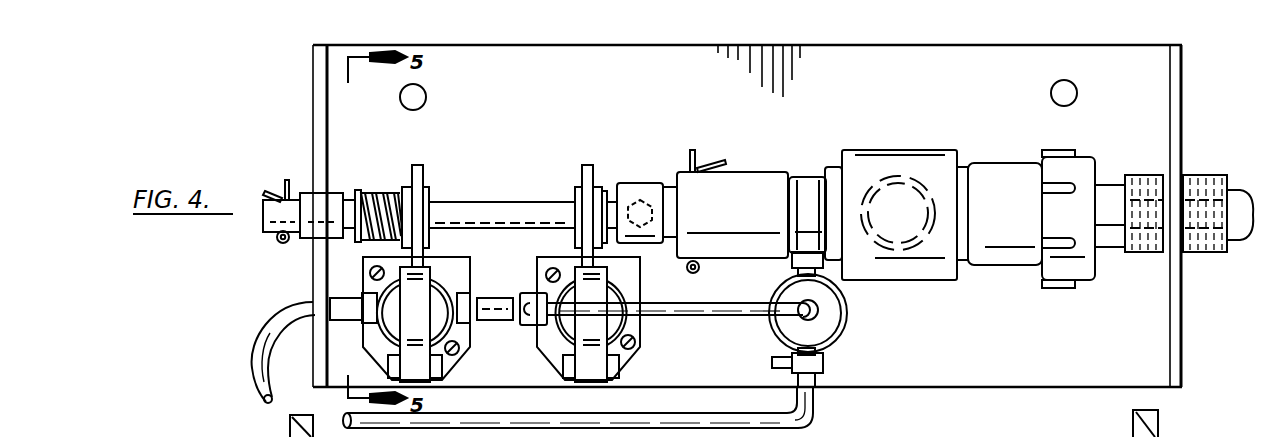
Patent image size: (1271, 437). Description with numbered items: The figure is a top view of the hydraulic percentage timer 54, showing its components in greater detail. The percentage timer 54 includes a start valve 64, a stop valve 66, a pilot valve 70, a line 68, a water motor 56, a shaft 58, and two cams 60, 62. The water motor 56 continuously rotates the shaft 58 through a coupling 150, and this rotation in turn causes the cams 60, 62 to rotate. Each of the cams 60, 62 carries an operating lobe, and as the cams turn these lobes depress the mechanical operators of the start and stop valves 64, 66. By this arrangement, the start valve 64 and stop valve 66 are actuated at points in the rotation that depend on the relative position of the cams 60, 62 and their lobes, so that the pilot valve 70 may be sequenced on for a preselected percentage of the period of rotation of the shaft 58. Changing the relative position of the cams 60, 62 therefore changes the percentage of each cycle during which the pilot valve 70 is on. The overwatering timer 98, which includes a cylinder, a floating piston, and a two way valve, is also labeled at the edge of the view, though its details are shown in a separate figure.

The percentage timer 54 is at (534, 138).
The water motor 56 is at (1000, 170).
The shaft 58 is at (493, 208).
The cam 60 is at (588, 164).
The cam 62 is at (415, 164).
The start valve 64 is at (613, 298).
The stop valve 66 is at (447, 293).
The line 68 is at (698, 310).
The pilot valve 70 is at (847, 313).
The coupling 150 is at (756, 171).
The overwatering timer 98 is at (238, 434).